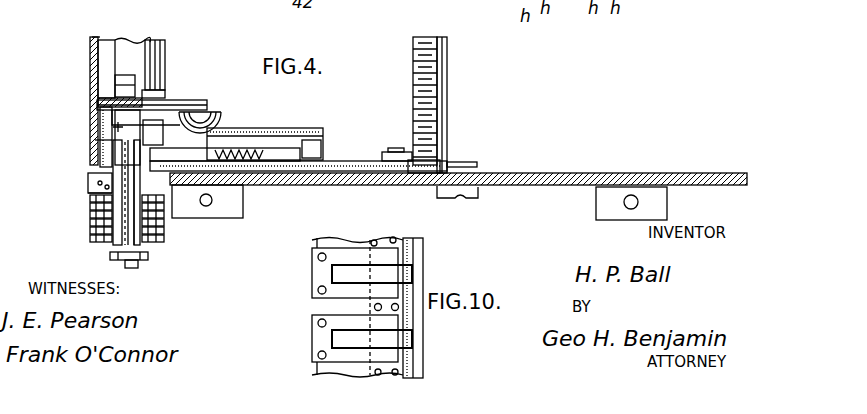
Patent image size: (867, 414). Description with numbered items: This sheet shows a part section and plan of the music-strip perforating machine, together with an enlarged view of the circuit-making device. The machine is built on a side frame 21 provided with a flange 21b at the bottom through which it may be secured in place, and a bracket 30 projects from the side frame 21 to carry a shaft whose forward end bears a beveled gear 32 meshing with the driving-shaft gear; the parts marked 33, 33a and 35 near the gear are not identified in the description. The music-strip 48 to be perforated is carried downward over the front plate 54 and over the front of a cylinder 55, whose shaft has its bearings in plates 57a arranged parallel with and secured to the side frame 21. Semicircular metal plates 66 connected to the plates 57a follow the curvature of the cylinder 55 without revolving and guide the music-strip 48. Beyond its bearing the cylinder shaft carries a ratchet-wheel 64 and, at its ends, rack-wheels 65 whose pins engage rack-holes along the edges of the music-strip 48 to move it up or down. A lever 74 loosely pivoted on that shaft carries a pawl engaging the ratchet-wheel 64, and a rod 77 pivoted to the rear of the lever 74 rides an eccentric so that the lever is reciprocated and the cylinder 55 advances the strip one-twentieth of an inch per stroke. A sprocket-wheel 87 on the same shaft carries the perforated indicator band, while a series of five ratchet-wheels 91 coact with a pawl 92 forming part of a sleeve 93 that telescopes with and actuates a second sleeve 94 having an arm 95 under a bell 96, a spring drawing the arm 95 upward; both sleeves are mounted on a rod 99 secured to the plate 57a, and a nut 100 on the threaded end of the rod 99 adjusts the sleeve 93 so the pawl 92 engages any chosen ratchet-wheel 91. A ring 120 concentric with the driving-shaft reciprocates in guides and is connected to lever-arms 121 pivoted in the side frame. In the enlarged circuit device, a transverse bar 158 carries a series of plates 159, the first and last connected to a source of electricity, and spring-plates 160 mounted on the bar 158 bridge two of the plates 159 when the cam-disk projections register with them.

In FIG. 4, the side frame 21 is at (706, 172).
In FIG. 4, the flange 21b is at (178, 212).
In FIG. 4, the bracket 30 is at (478, 198).
In FIG. 4, the beveled gear 32 is at (376, 20).
In FIG. 4, the member 33 is at (469, 5).
In FIG. 4, the member 33a is at (656, 24).
In FIG. 4, the member 35 is at (551, 30).
In FIG. 4, the music-strip 48 is at (88, 48).
In FIG. 4, the front plate 54 is at (92, 38).
In FIG. 4, the cylinder 55 is at (147, 48).
In FIG. 4, the plate 57a is at (90, 98).
In FIG. 4, the ratchet-wheel 64 is at (95, 142).
In FIG. 4, the rack-wheel 65 is at (88, 160).
In FIG. 4, the semicircular metal plate 66 is at (104, 86).
In FIG. 4, the lever 74 is at (268, 132).
In FIG. 4, the rod 77 is at (297, 172).
In FIG. 4, the sprocket-wheel 87 is at (100, 186).
In FIG. 4, the ratchet-wheel 91 is at (102, 211).
In FIG. 4, the pawl 92 is at (110, 238).
In FIG. 4, the sleeve 93 is at (150, 240).
In FIG. 4, the sleeve 94 is at (118, 124).
In FIG. 4, the arm 95 is at (160, 116).
In FIG. 4, the bell 96 is at (222, 118).
In FIG. 4, the rod 99 is at (140, 266).
In FIG. 4, the nut 100 is at (150, 262).
In FIG. 4, the ring 120 is at (478, 164).
In FIG. 4, the lever-arm 121 is at (403, 150).
In FIG. 4, the bar 158 is at (444, 62).
In FIG. 10, the bar 158 is at (325, 308).
In FIG. 4, the plate 159 is at (447, 112).
In FIG. 10, the plate 159 is at (423, 372).
In FIG. 4, the spring-plate 160 is at (414, 62).
In FIG. 10, the spring-plate 160 is at (348, 355).